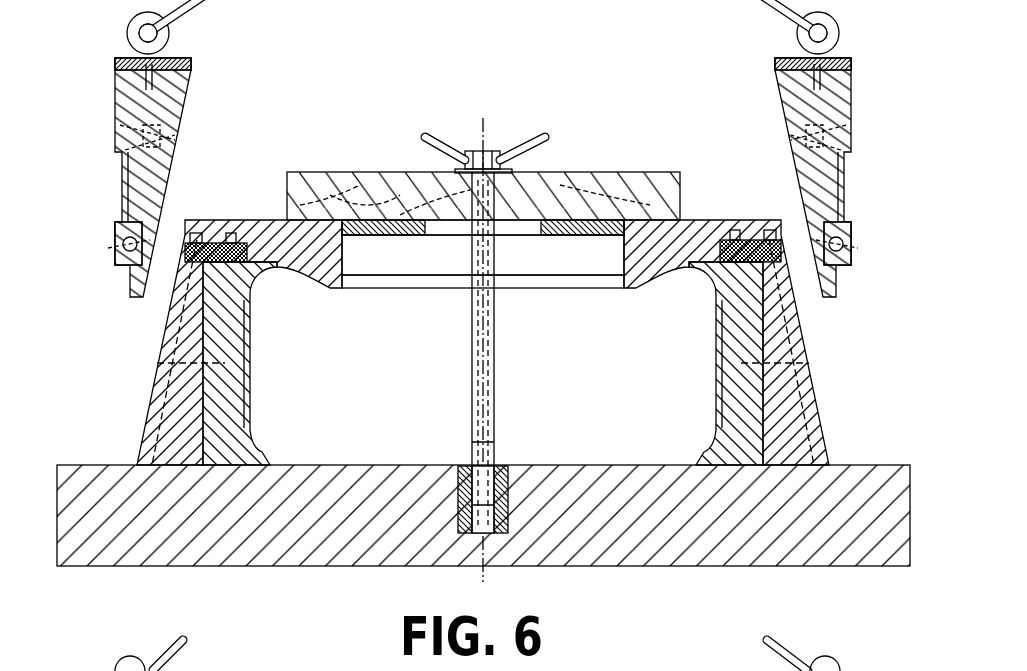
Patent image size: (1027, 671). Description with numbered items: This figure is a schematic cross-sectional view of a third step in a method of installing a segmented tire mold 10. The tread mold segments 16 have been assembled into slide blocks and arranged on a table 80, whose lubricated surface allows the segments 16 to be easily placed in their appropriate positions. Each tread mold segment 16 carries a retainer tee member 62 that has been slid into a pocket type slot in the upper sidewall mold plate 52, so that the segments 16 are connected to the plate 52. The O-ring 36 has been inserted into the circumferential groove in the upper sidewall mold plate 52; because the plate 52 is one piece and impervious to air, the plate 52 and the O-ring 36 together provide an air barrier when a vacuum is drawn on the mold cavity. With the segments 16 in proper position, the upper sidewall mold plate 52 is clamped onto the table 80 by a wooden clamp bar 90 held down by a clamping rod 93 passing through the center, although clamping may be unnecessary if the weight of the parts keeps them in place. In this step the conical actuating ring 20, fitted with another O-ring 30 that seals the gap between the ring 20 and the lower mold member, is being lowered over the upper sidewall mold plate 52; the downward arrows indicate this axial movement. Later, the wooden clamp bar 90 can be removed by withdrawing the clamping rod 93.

The segmented tire mold 10 is at (896, 670).
The tread mold segments 16 is at (246, 330).
The conical actuating ring 20 is at (213, 150).
The O-ring 30 is at (133, 292).
The O-ring 36 is at (188, 228).
The upper sidewall mold plate 52 is at (672, 268).
The retainer tee members 62 is at (743, 233).
The table 80 is at (380, 470).
The wooden clamp bar 90 is at (587, 182).
The clamping rod 93 is at (494, 340).